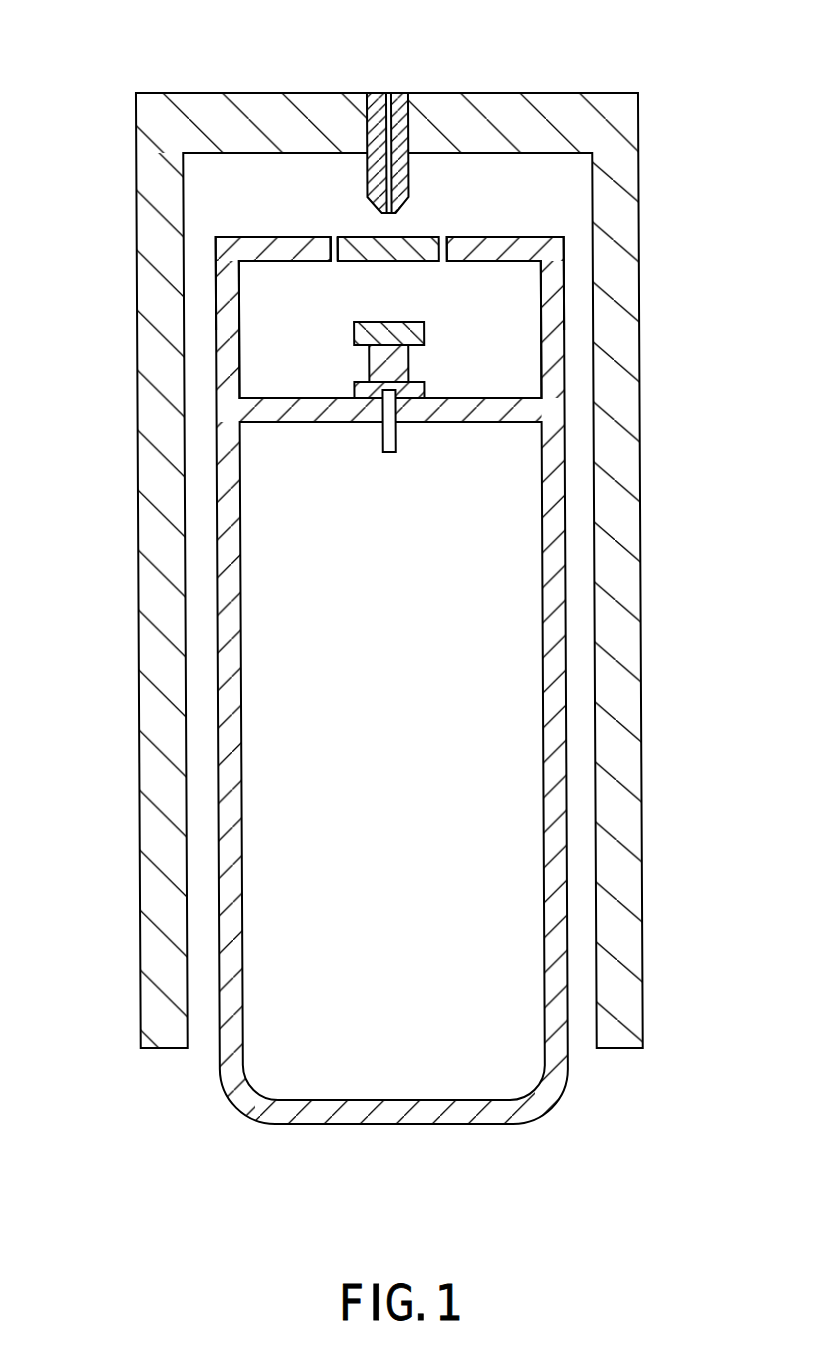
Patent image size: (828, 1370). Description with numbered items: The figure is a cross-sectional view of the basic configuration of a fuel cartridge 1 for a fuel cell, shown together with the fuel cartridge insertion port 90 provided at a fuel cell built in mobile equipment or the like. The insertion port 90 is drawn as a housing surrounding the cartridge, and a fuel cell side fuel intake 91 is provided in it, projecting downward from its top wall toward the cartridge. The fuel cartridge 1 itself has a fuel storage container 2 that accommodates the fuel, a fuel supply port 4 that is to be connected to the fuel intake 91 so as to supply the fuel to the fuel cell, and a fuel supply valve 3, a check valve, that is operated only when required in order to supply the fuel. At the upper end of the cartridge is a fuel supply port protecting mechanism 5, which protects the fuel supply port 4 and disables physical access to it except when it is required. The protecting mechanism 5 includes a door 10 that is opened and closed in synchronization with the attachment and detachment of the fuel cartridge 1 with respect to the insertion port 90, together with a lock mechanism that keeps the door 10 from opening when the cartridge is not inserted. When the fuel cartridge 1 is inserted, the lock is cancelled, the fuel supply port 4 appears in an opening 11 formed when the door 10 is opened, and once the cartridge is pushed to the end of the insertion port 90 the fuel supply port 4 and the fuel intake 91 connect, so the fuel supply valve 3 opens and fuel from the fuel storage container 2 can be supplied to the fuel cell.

The fuel cartridge 1 is at (413, 1126).
The fuel storage container 2 is at (558, 865).
The fuel supply valve 3 is at (392, 440).
The fuel supply port 4 is at (420, 333).
The fuel supply port protecting mechanism 5 is at (215, 322).
The door 10 is at (427, 245).
The opening 11 is at (333, 247).
The fuel cartridge insertion port 90 is at (150, 92).
The fuel cell side fuel intake 91 is at (424, 172).